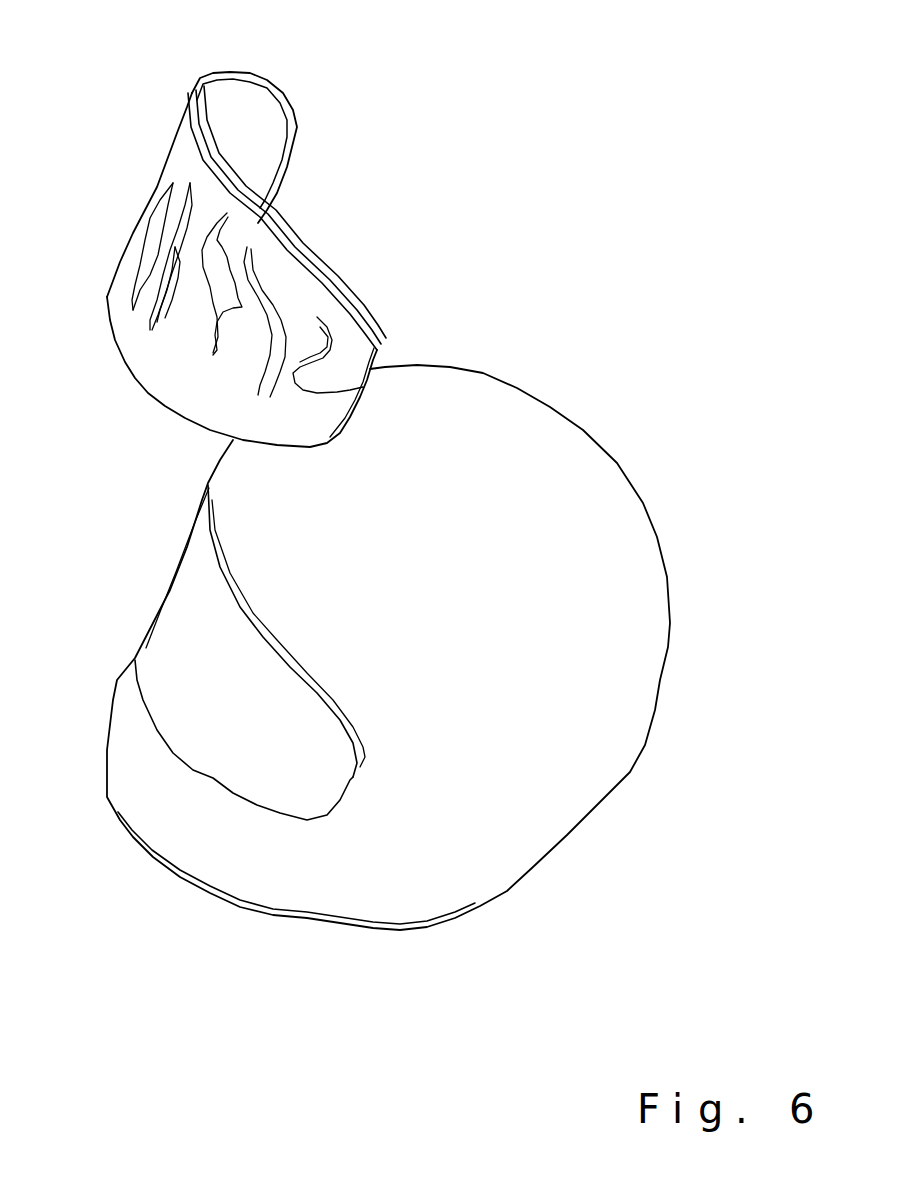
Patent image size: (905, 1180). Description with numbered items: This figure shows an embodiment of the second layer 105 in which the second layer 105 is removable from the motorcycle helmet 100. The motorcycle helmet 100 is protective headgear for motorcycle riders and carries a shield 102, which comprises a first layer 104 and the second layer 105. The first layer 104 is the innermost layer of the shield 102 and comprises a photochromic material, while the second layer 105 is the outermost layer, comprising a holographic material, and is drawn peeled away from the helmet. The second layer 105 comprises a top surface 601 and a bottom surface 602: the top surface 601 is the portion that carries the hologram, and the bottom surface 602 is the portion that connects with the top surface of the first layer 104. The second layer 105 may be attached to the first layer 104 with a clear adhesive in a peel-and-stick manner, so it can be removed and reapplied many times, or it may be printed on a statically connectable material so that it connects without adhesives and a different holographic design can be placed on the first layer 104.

The motorcycle helmet 100 is at (410, 647).
The shield 102 is at (197, 280).
The first layer 104 is at (373, 735).
The second layer 105 is at (307, 280).
The top surface 601 is at (216, 181).
The bottom surface 602 is at (357, 135).